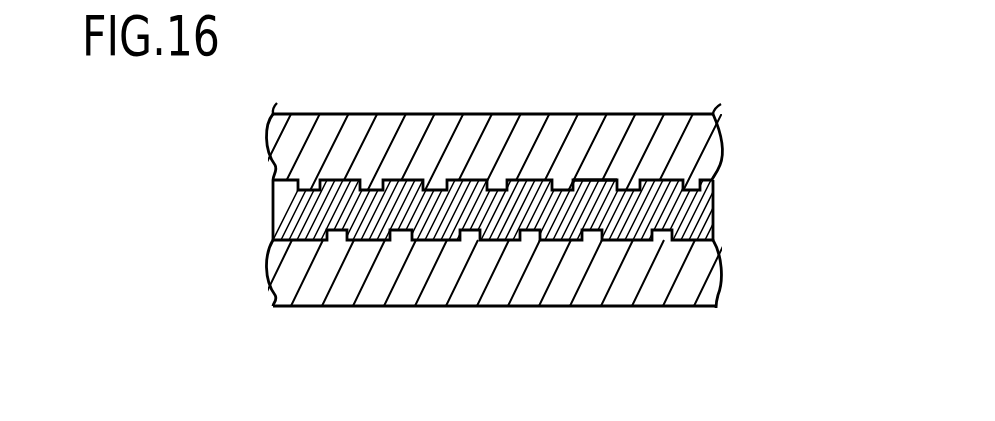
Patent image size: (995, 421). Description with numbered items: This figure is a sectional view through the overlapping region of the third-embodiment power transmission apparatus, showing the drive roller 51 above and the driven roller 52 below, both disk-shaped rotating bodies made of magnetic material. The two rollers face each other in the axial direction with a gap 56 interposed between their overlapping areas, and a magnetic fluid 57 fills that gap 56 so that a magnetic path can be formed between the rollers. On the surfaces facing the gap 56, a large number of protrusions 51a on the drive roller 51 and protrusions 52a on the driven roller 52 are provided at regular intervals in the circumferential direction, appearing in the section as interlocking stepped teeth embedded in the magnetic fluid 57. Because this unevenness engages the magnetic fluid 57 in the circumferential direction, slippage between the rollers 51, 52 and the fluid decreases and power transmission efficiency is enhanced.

The drive roller 51 is at (533, 140).
The protrusions 51a is at (287, 206).
The driven roller 52 is at (473, 290).
The protrusions 52a is at (293, 212).
The gap 56 is at (598, 188).
The magnetic fluid 57 is at (690, 215).